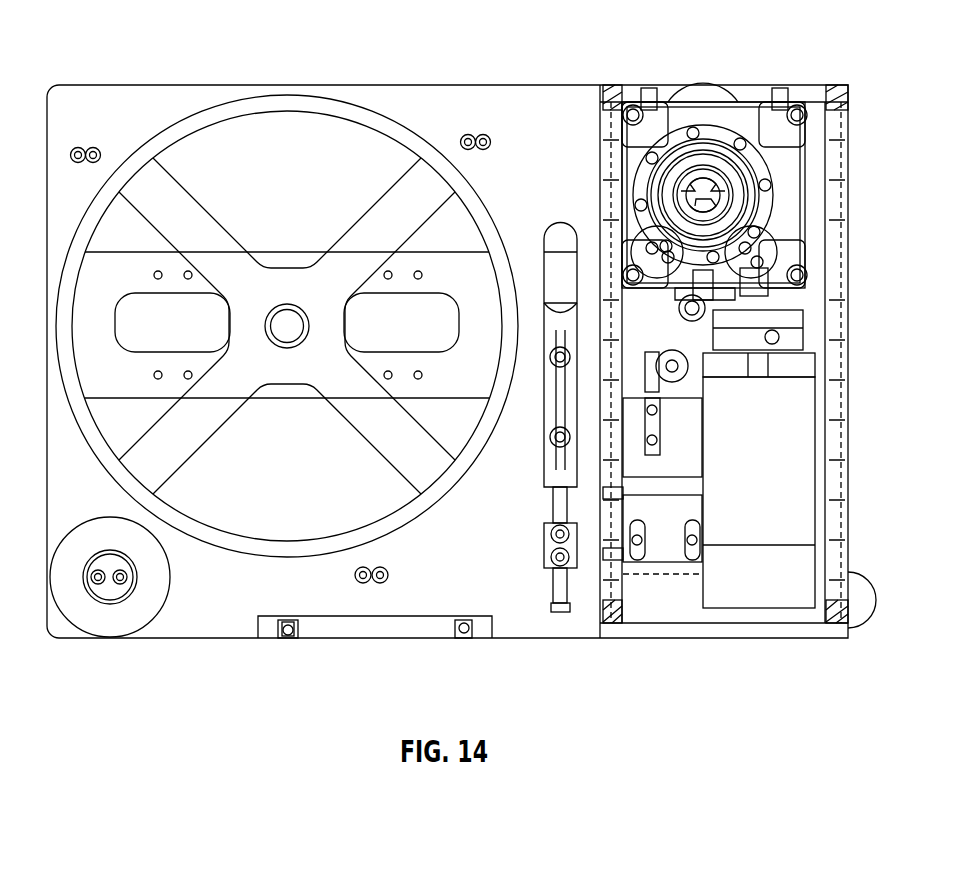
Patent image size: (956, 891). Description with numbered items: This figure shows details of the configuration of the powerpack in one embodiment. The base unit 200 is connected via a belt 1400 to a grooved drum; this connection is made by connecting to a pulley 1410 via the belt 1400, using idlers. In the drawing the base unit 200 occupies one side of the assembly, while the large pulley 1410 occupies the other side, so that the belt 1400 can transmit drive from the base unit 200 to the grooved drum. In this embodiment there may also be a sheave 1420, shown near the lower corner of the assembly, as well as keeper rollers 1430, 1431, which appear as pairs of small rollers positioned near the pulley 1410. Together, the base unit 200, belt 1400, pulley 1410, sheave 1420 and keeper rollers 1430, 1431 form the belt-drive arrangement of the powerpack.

The belt 1400 is at (568, 132).
The pulley 1410 is at (297, 152).
The sheave 1420 is at (105, 613).
The keeper roller 1430 is at (84, 147).
The keeper roller 1431 is at (467, 132).
The base unit 200 is at (853, 630).